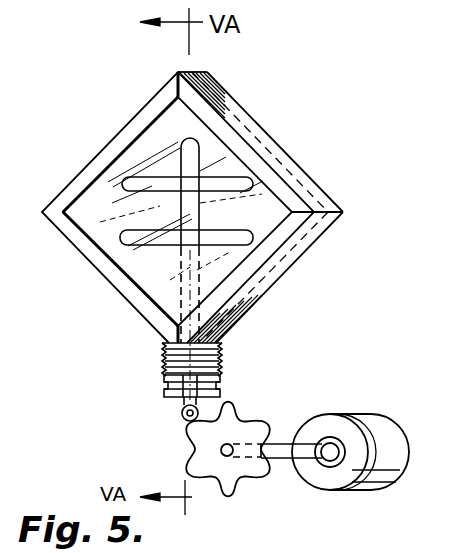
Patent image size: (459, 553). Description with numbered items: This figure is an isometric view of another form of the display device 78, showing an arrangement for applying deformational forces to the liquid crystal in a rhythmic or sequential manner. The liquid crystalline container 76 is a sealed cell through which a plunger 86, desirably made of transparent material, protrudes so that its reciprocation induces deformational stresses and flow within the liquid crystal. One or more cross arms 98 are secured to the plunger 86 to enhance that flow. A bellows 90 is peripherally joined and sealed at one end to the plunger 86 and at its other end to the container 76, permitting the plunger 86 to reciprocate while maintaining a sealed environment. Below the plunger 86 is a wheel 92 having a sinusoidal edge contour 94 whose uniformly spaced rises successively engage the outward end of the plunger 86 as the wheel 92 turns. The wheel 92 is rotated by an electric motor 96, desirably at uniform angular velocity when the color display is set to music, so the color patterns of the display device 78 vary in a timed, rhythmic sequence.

The liquid crystalline container 76 is at (243, 101).
The display device 78 is at (377, 186).
The plunger 86 is at (182, 295).
The bellows 90 is at (223, 353).
The wheel 92 is at (250, 478).
The sinusoidal edge contour 94 is at (262, 430).
The electric motor 96 is at (370, 427).
The cross arms 98 is at (238, 173).